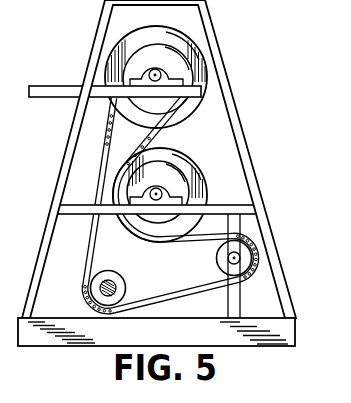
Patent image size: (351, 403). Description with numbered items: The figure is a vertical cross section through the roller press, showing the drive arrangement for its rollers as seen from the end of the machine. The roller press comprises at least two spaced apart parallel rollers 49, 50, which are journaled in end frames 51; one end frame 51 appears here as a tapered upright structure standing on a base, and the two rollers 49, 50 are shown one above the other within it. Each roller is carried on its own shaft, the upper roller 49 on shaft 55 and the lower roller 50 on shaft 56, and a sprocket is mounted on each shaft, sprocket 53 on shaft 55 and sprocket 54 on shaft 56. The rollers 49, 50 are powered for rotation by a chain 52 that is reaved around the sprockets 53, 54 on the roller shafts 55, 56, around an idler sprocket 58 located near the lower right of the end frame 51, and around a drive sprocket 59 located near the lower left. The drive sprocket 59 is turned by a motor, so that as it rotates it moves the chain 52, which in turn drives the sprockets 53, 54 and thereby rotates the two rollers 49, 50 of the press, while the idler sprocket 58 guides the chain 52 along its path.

The roller 49 is at (187, 41).
The roller 50 is at (191, 167).
The end frame 51 is at (240, 136).
The chain 52 is at (107, 134).
The sprocket 53 is at (137, 58).
The sprocket 54 is at (181, 188).
The shaft 55 is at (163, 74).
The shaft 56 is at (158, 192).
The idler sprocket 58 is at (247, 259).
The drive sprocket 59 is at (116, 279).